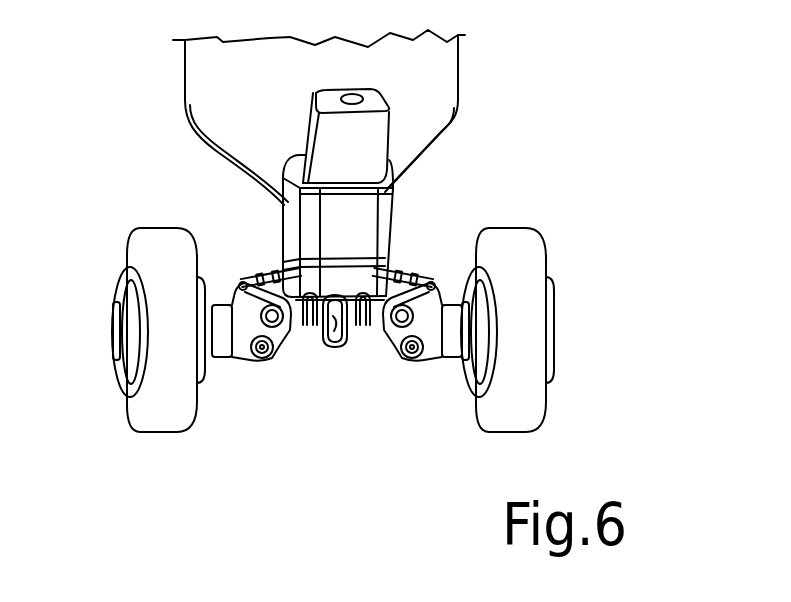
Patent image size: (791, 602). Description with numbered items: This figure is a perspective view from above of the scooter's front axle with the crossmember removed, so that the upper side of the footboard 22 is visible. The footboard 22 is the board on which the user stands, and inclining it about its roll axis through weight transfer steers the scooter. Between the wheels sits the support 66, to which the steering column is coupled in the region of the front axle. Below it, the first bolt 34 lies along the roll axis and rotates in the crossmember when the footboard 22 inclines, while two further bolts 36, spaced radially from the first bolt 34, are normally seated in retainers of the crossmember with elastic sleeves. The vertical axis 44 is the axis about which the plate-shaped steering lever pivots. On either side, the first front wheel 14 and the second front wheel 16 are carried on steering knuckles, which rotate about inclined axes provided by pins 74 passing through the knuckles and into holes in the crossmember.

The first front wheel 14 is at (537, 257).
The second front wheel 16 is at (147, 256).
The footboard 22 is at (440, 82).
The first bolt 34 is at (324, 340).
The further bolts 36 is at (302, 326).
The axis 44 is at (346, 330).
The support 66 is at (368, 233).
The pins 74 is at (258, 369).